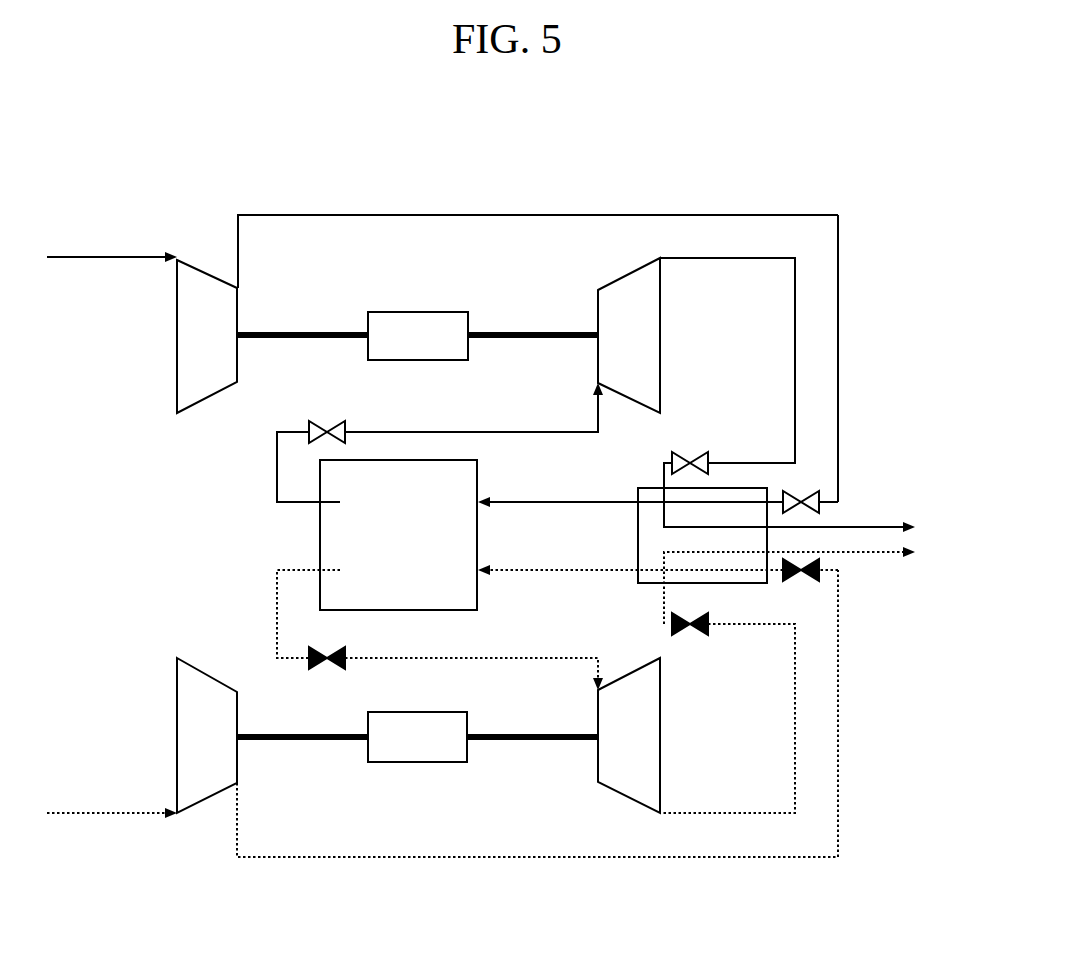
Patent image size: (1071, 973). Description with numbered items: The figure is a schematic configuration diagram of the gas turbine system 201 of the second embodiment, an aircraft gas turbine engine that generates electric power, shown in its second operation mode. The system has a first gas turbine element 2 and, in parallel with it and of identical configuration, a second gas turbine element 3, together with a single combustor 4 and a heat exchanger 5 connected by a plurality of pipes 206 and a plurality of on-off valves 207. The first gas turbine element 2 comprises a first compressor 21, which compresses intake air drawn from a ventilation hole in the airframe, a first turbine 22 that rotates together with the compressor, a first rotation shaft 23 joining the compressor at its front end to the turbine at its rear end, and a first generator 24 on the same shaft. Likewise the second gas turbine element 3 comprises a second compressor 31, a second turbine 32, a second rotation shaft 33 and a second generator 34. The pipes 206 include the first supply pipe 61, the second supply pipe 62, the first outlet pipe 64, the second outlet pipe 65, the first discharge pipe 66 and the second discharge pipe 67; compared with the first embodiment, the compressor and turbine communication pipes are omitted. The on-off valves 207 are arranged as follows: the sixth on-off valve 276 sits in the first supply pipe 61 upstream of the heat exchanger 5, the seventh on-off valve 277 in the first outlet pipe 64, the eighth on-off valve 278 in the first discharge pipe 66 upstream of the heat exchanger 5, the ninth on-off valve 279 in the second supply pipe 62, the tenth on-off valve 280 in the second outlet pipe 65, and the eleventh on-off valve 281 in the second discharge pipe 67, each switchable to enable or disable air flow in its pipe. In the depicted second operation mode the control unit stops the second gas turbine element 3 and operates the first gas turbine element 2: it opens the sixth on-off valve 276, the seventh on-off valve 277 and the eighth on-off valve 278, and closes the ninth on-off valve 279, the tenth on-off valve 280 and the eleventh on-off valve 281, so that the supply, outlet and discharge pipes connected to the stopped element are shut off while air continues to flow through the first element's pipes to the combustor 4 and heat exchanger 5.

The gas turbine system 201 is at (778, 170).
The pipes 206 is at (558, 215).
The first supply pipe 61 is at (838, 300).
The first gas turbine element 2 is at (157, 342).
The first compressor 21 is at (205, 275).
The first rotation shaft 23 is at (343, 331).
The first generator 24 is at (420, 312).
The first turbine 22 is at (625, 277).
The first discharge pipe 66 is at (722, 258).
The eighth on-off valve 278 is at (692, 460).
The first outlet pipe 64 is at (380, 432).
The seventh on-off valve 277 is at (340, 427).
The combustor 4 is at (408, 462).
The heat exchanger 5 is at (646, 486).
The sixth on-off valve 276 is at (801, 497).
The ninth on-off valve 279 is at (801, 580).
The on-off valves 207 is at (332, 688).
The tenth on-off valve 280 is at (332, 664).
The second outlet pipe 65 is at (540, 660).
The second gas turbine element 3 is at (147, 727).
The second compressor 31 is at (203, 800).
The second rotation shaft 33 is at (537, 741).
The second generator 34 is at (415, 763).
The second turbine 32 is at (628, 795).
The second discharge pipe 67 is at (728, 815).
The eleventh on-off valve 281 is at (690, 636).
The second supply pipe 62 is at (495, 858).